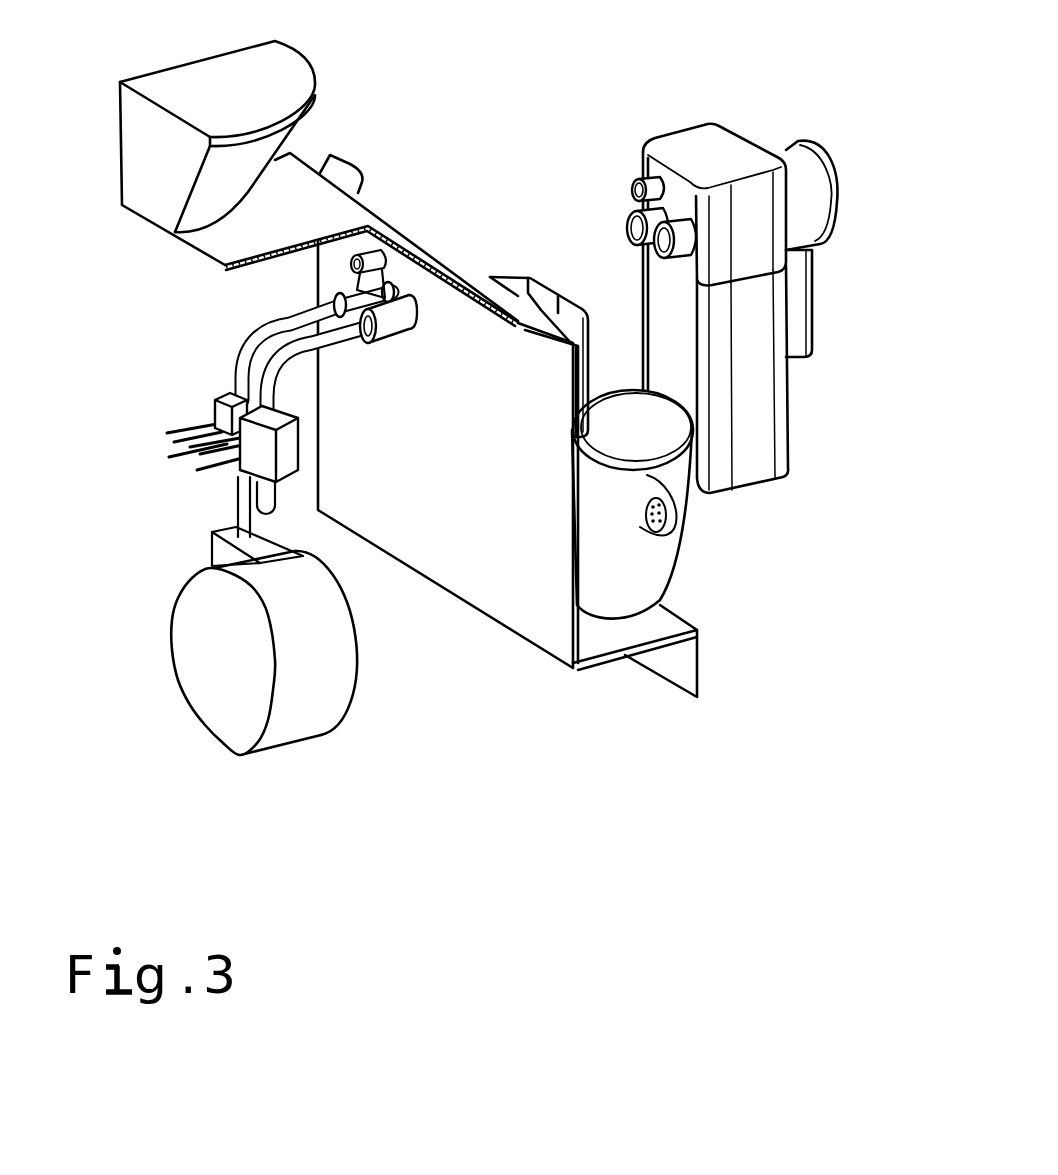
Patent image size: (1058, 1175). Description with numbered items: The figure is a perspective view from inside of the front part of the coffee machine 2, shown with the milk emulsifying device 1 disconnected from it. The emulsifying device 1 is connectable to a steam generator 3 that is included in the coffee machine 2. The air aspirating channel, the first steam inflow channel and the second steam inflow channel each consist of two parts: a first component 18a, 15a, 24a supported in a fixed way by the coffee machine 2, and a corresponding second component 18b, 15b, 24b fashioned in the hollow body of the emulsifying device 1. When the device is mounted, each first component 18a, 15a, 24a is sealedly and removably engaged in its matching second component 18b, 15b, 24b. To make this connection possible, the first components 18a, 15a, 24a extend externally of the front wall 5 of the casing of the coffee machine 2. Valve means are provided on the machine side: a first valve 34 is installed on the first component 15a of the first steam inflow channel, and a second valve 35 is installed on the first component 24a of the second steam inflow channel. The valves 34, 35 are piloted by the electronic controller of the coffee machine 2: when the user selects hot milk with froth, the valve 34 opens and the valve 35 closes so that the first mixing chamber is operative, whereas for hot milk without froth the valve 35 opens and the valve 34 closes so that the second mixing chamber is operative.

The emulsifying device 1 is at (688, 140).
The coffee machine 2 is at (353, 110).
The steam generator 3 is at (290, 720).
The front wall 5 is at (513, 435).
The first component of the first steam inflow channel 15a is at (337, 298).
The second component of the first steam inflow channel 15b is at (627, 232).
The first component of the air aspirating channel 18a is at (380, 260).
The second component of the air aspirating channel 18b is at (631, 188).
The first component of the second steam inflow channel 24a is at (423, 320).
The second component of the second steam inflow channel 24b is at (678, 262).
The first valve 34 is at (222, 395).
The second valve 35 is at (278, 460).